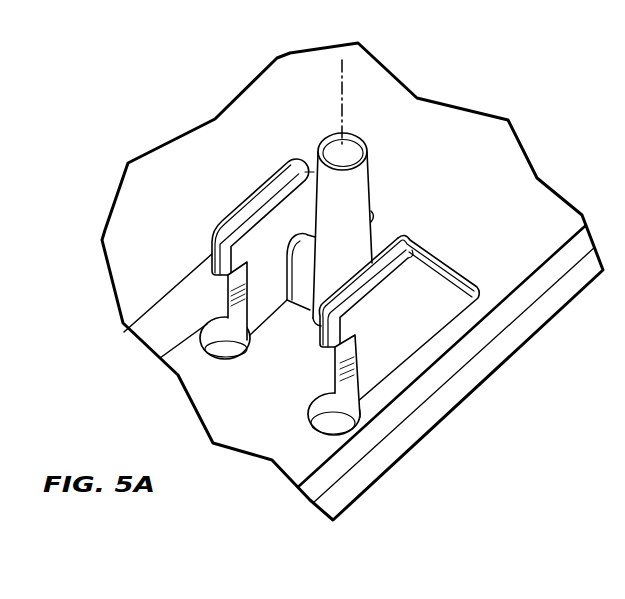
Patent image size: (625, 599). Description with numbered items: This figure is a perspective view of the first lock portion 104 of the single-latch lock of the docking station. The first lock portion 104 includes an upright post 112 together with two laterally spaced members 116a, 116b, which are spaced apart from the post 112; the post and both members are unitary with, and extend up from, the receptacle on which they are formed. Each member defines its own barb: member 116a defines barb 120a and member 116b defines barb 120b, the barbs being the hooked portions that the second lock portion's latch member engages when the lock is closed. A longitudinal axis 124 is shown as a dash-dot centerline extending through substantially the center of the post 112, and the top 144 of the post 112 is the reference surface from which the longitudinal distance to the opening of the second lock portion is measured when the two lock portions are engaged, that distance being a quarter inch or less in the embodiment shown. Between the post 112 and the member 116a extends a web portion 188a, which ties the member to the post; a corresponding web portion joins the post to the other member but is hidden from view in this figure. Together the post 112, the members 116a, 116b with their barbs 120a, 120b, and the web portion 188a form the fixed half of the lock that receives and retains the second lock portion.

The first lock portion 104 is at (462, 137).
The post 112 is at (360, 200).
The member 116a is at (217, 233).
The member 116b is at (408, 323).
The barb 120a is at (217, 277).
The barb 120b is at (335, 347).
The longitudinal axis 124 is at (347, 100).
The top of post 144 is at (337, 148).
The web portion 188a is at (303, 270).